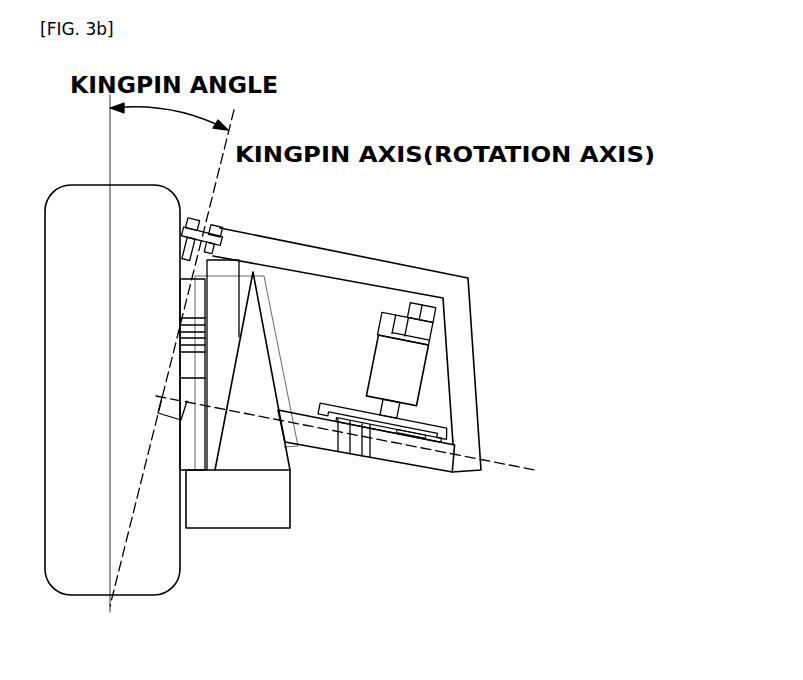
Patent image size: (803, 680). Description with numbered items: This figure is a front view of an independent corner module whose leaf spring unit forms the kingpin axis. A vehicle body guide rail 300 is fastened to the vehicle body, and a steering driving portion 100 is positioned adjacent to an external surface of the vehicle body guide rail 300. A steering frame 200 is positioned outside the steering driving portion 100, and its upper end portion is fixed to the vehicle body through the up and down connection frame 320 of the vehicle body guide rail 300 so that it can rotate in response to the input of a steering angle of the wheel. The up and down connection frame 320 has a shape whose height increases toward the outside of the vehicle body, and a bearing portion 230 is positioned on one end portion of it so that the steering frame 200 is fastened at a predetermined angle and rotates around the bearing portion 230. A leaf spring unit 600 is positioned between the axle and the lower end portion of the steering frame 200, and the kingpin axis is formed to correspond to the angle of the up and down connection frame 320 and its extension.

The steering driving portion 100 is at (427, 366).
The steering frame 200 is at (291, 457).
The bearing portion 230 is at (220, 238).
The vehicle body guide rail 300 is at (417, 455).
The up and down connection frame 320 is at (436, 284).
The leaf spring unit 600 is at (232, 507).